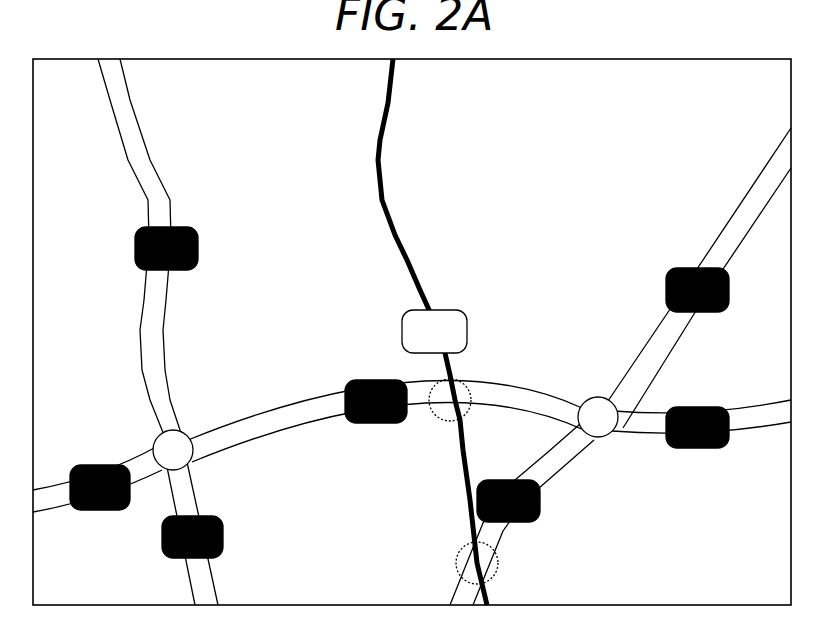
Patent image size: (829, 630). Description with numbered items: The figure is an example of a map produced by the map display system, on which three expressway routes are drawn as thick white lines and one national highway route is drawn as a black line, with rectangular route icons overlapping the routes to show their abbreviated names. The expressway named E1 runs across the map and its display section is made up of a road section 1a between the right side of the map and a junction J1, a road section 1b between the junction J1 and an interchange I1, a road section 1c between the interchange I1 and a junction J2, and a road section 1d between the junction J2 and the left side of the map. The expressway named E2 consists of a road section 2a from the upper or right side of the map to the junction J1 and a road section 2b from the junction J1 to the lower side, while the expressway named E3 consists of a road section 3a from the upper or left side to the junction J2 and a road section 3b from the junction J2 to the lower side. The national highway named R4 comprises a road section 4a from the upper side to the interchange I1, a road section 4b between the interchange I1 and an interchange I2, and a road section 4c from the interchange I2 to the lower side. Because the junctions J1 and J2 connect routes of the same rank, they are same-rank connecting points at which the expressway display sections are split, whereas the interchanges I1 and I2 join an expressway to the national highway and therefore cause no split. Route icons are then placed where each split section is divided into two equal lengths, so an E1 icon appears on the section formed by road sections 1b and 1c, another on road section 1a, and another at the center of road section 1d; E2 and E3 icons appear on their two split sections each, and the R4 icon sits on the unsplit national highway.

The road section 1a is at (643, 433).
The road section 1b is at (560, 397).
The road section 1c is at (287, 430).
The road section 1d is at (133, 451).
The road section 2a is at (728, 222).
The road section 2b is at (563, 458).
The road section 3a is at (148, 200).
The road section 3b is at (215, 585).
The road section 4a is at (378, 138).
The road section 4b is at (460, 442).
The road section 4c is at (488, 597).
The junction J1 is at (603, 437).
The junction J2 is at (182, 430).
The interchange I1 is at (463, 383).
The interchange I2 is at (457, 563).
The route name E1 is at (399, 445).
The route name E2 is at (603, 395).
The route name E3 is at (179, 392).
The route name R4 is at (434, 331).